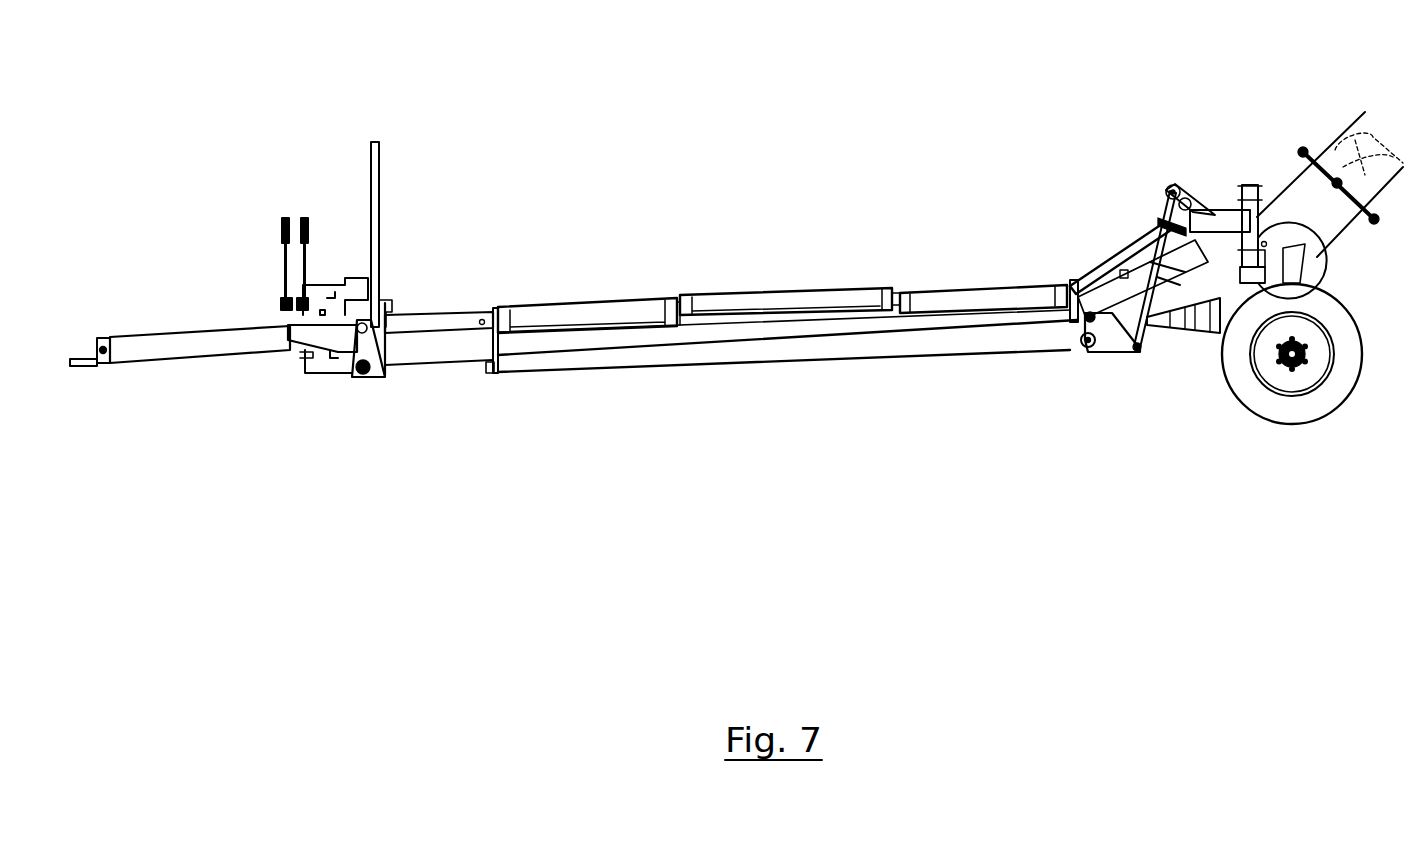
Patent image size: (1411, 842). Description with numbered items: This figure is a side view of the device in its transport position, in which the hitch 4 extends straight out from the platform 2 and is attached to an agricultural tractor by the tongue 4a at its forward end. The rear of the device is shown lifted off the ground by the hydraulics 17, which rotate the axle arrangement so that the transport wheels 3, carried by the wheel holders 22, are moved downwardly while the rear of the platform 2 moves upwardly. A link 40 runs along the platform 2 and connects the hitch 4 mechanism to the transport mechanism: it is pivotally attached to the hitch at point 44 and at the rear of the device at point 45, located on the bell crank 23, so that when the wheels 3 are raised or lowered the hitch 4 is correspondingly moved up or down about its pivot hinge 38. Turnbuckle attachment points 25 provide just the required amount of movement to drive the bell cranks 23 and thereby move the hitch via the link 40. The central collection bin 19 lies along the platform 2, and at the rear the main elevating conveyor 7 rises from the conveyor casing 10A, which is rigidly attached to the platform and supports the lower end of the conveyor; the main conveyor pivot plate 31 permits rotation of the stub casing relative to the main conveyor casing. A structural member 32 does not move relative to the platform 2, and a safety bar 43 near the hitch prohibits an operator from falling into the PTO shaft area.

The platform 2 is at (632, 300).
The transport wheels 3 is at (1340, 323).
The hitch 4 is at (233, 328).
The tongue 4a is at (82, 370).
The main elevating conveyor 7 is at (1365, 110).
The conveyor casing 10A is at (1173, 300).
The hydraulics cylinder 17 is at (1108, 267).
The central collection bin 19 is at (795, 297).
The wheel holders 22 is at (1237, 217).
The bell crank 23 is at (1117, 342).
The turnbuckle attachment points 25 is at (1198, 183).
The main conveyor pivot plate 31 is at (1303, 150).
The structural member 32 is at (1168, 213).
The pivot hinge 38 is at (357, 337).
The link 40 is at (425, 365).
The safety bar 43 is at (375, 155).
The hitch attachment point 44 is at (362, 382).
The rear attachment point 45 is at (1087, 325).